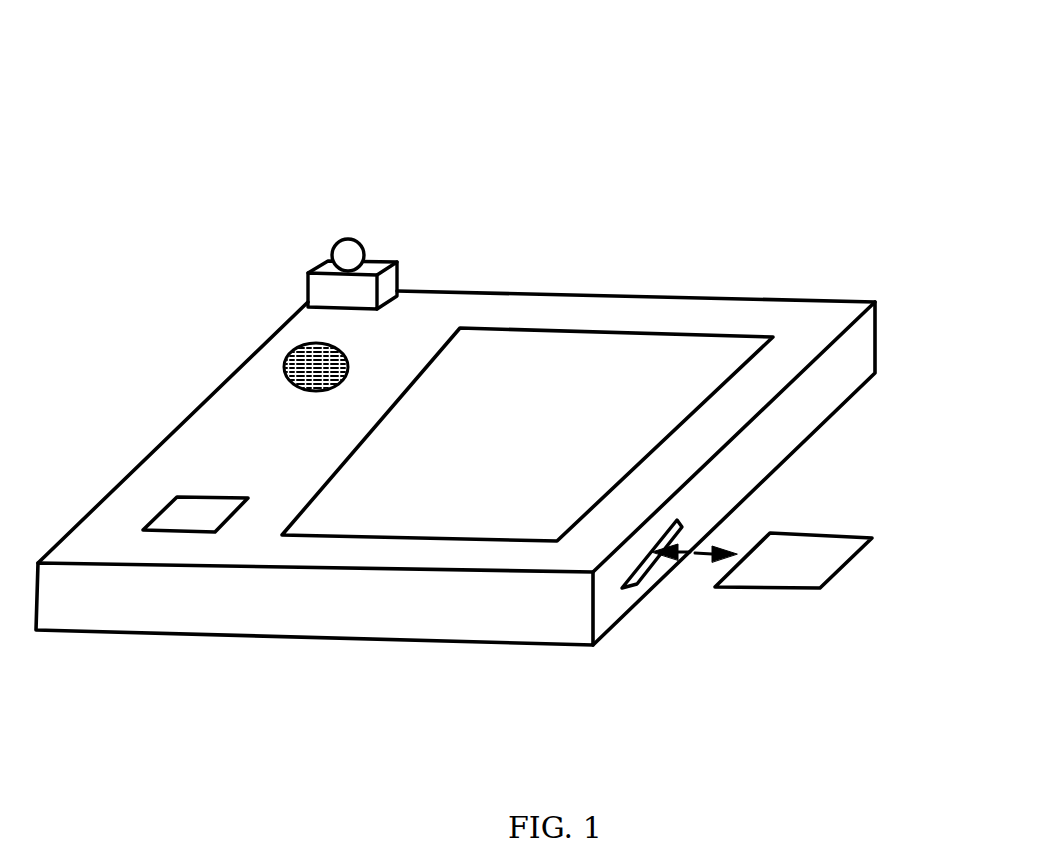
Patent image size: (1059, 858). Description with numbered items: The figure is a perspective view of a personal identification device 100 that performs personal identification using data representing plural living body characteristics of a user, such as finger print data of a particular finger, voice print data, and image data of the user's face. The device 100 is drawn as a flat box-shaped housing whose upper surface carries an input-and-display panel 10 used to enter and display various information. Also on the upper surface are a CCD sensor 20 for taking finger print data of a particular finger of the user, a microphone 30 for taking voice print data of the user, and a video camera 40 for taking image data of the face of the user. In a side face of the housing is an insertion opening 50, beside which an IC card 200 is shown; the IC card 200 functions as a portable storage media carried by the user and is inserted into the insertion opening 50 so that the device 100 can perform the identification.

The personal identification device 100 is at (728, 92).
The input-and-display panel 10 is at (653, 330).
The CCD sensor 20 is at (160, 507).
The microphone 30 is at (291, 347).
The video camera 40 is at (368, 245).
The insertion opening 50 is at (640, 572).
The IC card 200 is at (813, 535).